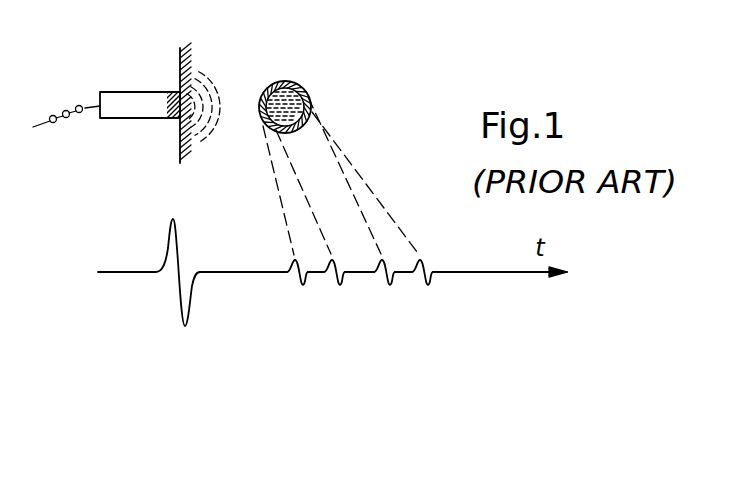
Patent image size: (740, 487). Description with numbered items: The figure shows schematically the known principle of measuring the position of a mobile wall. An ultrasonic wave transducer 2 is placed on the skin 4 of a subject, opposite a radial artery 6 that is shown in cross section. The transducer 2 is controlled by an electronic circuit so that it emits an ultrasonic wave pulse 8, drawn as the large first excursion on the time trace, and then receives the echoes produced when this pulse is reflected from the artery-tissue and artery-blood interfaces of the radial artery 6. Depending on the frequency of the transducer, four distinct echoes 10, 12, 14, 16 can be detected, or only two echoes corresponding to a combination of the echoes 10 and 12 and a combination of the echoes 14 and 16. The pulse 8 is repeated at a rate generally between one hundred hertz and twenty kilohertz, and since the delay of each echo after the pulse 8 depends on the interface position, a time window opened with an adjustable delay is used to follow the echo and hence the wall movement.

The ultrasonic wave transducer 2 is at (123, 105).
The skin 4 is at (178, 67).
The radial artery 6 is at (302, 84).
The ultrasonic wave pulse 8 is at (172, 285).
The first echo 10 is at (291, 278).
The second echo 12 is at (331, 278).
The third echo 14 is at (379, 278).
The fourth echo 16 is at (419, 279).